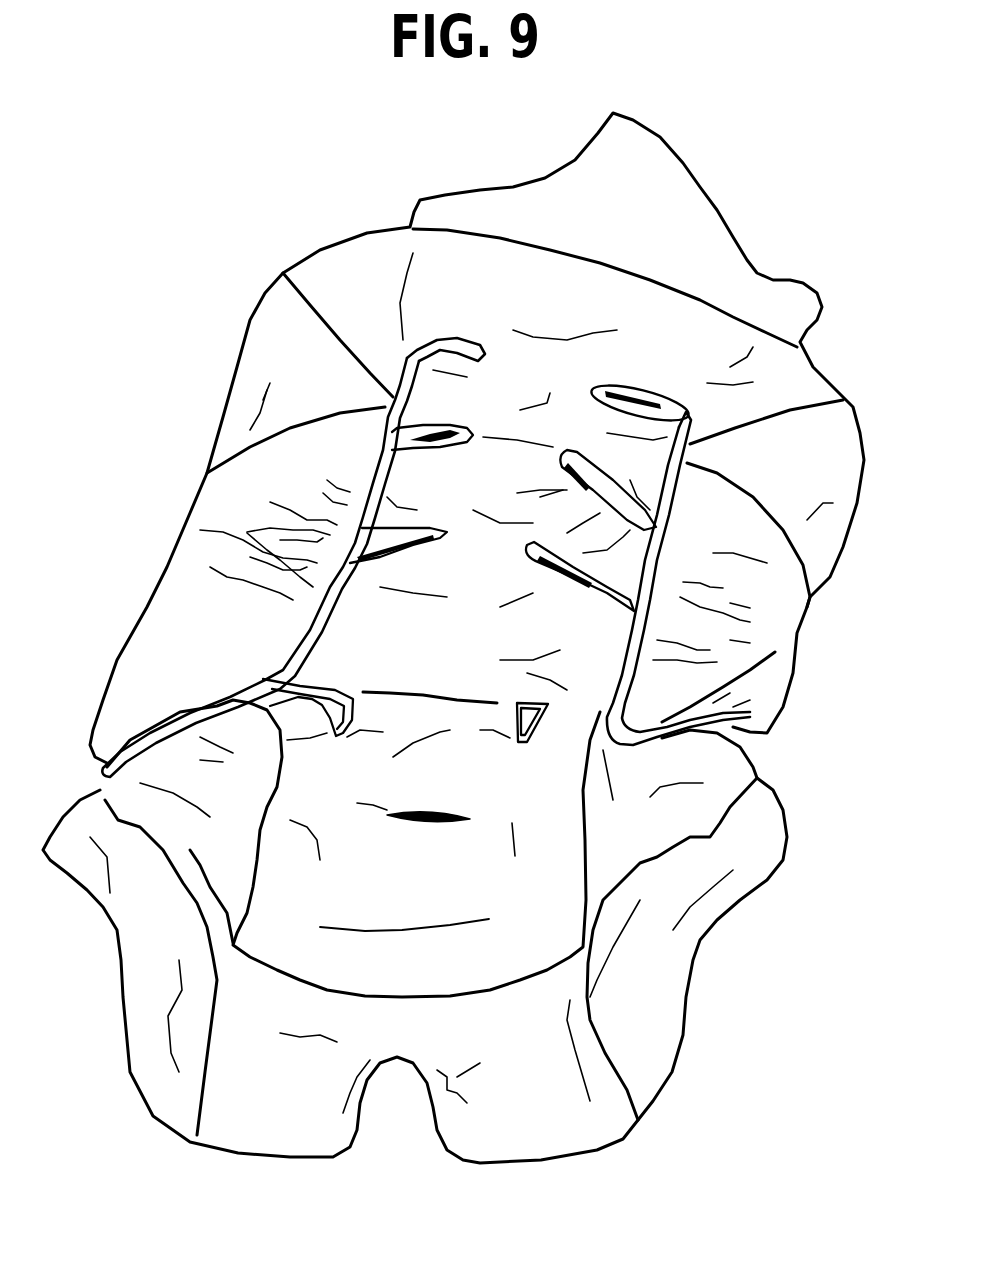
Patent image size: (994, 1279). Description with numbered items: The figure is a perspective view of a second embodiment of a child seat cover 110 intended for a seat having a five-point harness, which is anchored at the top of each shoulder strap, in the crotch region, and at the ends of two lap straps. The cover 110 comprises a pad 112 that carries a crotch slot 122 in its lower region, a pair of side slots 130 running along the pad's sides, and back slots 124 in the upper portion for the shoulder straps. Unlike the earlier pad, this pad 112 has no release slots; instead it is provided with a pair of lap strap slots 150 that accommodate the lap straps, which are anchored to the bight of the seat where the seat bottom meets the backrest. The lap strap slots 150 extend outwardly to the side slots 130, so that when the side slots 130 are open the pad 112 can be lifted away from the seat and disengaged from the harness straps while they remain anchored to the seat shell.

The cover 110 is at (356, 203).
The pad 112 is at (815, 382).
The crotch slot 122 is at (400, 820).
The back slots 124 is at (453, 340).
The side slots 130 is at (340, 603).
The lap strap slots 150 is at (333, 733).